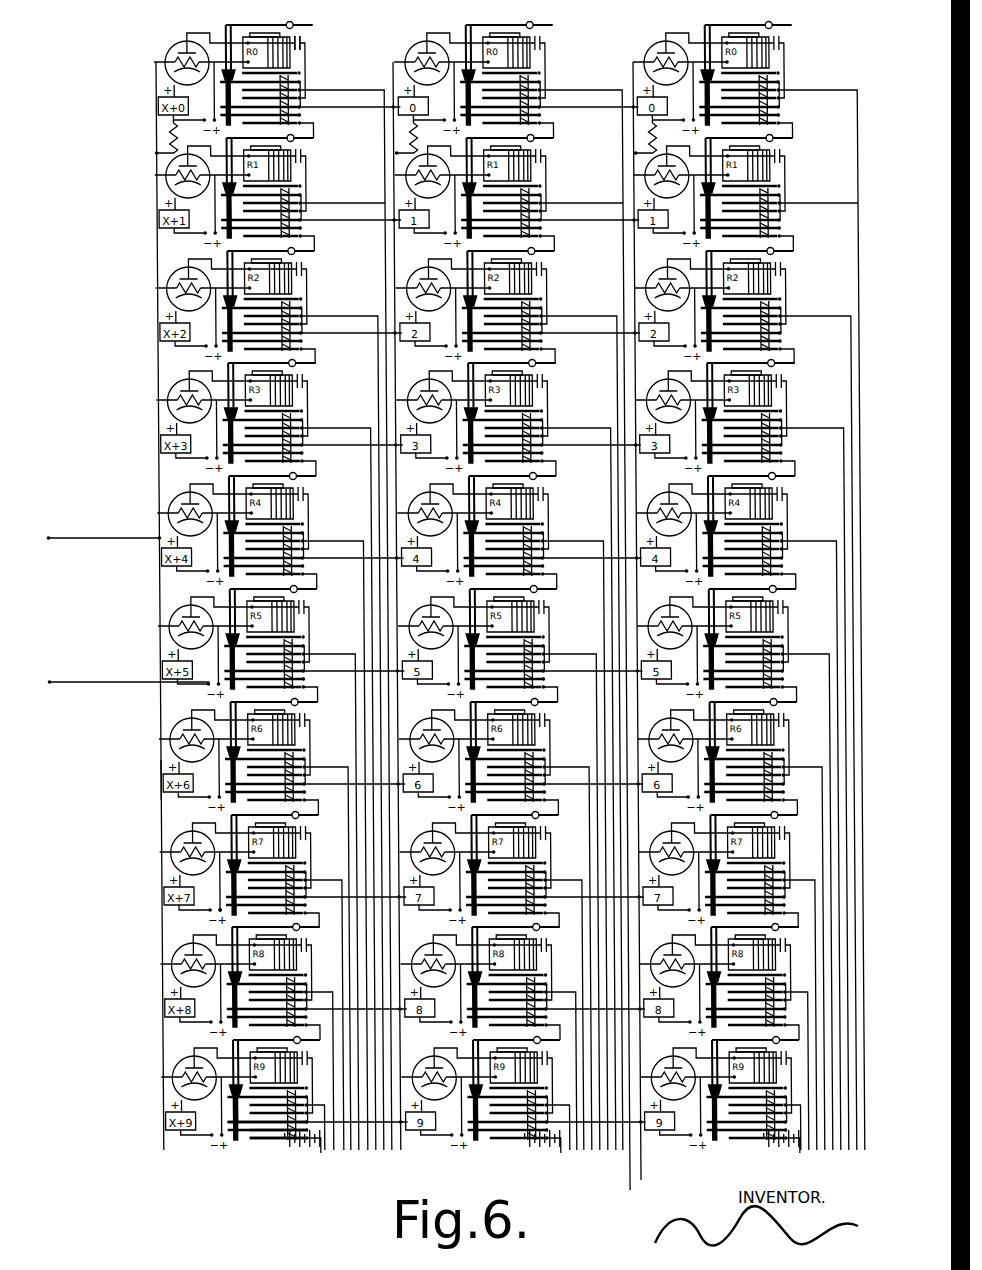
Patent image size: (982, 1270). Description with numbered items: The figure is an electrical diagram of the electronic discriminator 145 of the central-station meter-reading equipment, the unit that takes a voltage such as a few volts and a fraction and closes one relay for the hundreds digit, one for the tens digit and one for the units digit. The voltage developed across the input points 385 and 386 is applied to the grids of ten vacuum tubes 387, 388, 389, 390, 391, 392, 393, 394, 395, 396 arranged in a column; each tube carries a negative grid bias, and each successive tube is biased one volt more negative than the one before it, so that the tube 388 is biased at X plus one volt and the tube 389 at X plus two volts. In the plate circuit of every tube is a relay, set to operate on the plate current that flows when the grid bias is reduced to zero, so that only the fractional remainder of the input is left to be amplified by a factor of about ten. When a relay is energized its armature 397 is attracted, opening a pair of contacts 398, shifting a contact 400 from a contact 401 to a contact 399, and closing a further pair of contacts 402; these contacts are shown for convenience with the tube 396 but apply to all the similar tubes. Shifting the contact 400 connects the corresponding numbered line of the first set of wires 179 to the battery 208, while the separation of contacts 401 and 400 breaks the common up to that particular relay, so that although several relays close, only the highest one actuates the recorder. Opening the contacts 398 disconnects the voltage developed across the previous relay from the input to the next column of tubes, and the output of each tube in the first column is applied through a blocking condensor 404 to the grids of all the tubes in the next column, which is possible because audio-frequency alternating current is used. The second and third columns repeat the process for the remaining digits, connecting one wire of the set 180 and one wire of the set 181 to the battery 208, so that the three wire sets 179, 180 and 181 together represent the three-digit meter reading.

The vacuum tube 387 is at (166, 54).
The vacuum tube 388 is at (166, 177).
The vacuum tube 389 is at (166, 291).
The vacuum tube 390 is at (166, 403).
The vacuum tube 391 is at (166, 512).
The vacuum tube 392 is at (168, 636).
The vacuum tube 393 is at (167, 750).
The vacuum tube 394 is at (166, 860).
The vacuum tube 395 is at (166, 968).
The vacuum tube 396 is at (165, 1080).
The armature 397 is at (226, 1040).
The pair of contacts 398 is at (262, 1132).
The contact 399 is at (252, 1140).
The contact 400 is at (244, 1124).
The contact 401 is at (231, 1124).
The pair of contacts 402 is at (248, 914).
The blocking condensor 404 is at (303, 43).
The battery 208 is at (290, 1150).
The set of wires 179 is at (346, 634).
The set of wires 180 is at (585, 640).
The set of wires 181 is at (822, 634).
The point 385 is at (97, 526).
The point 386 is at (122, 669).
The discriminator 145 is at (95, 794).